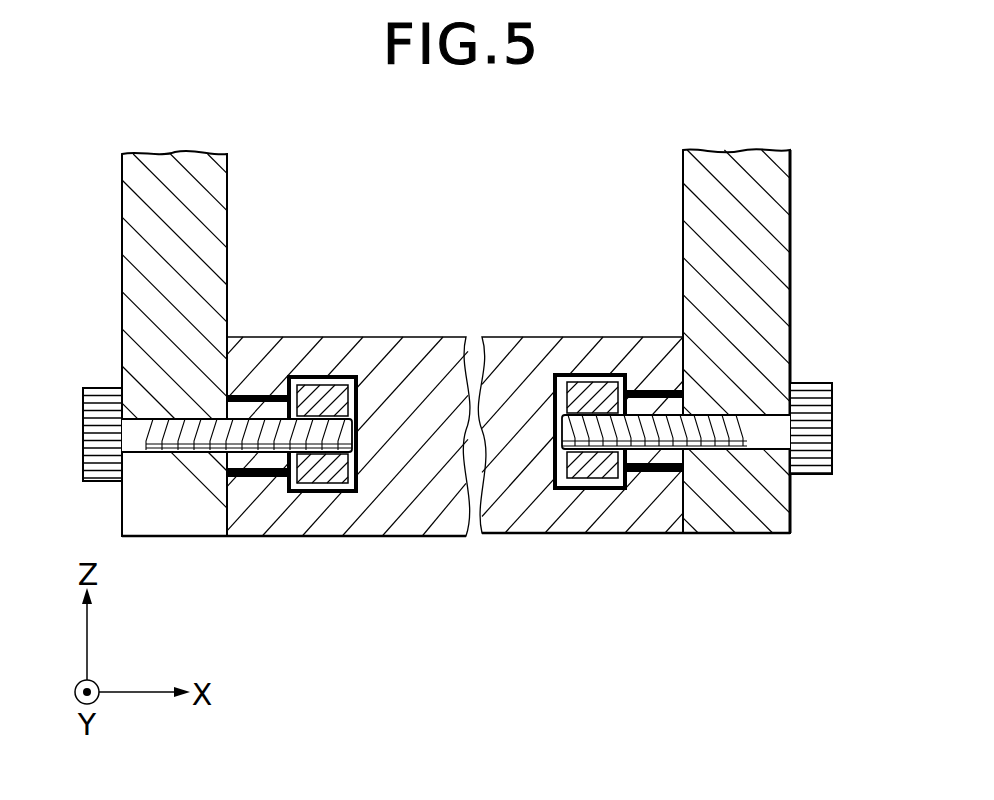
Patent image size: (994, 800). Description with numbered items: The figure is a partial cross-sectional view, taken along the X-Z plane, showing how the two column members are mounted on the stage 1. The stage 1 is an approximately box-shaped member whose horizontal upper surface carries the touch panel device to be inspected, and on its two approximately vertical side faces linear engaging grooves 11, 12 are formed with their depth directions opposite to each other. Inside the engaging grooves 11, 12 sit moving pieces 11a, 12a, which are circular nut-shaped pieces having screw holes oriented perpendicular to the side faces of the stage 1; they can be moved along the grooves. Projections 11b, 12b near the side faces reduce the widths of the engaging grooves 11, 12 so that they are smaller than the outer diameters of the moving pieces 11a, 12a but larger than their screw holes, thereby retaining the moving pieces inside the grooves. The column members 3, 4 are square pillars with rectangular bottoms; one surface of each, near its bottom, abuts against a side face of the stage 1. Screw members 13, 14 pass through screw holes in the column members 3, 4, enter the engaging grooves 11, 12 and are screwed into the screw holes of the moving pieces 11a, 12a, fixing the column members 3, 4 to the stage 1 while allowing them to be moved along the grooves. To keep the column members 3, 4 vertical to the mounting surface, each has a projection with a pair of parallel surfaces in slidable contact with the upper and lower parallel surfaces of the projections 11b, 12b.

The stage 1 is at (447, 528).
The column member 3 is at (786, 202).
The column member 4 is at (130, 218).
The engaging groove 11 is at (597, 386).
The moving piece 11a is at (595, 478).
The projection 11b is at (667, 472).
The engaging groove 12 is at (313, 388).
The moving piece 12a is at (331, 483).
The projection 12b is at (263, 476).
The screw member 13 is at (823, 420).
The screw member 14 is at (92, 425).